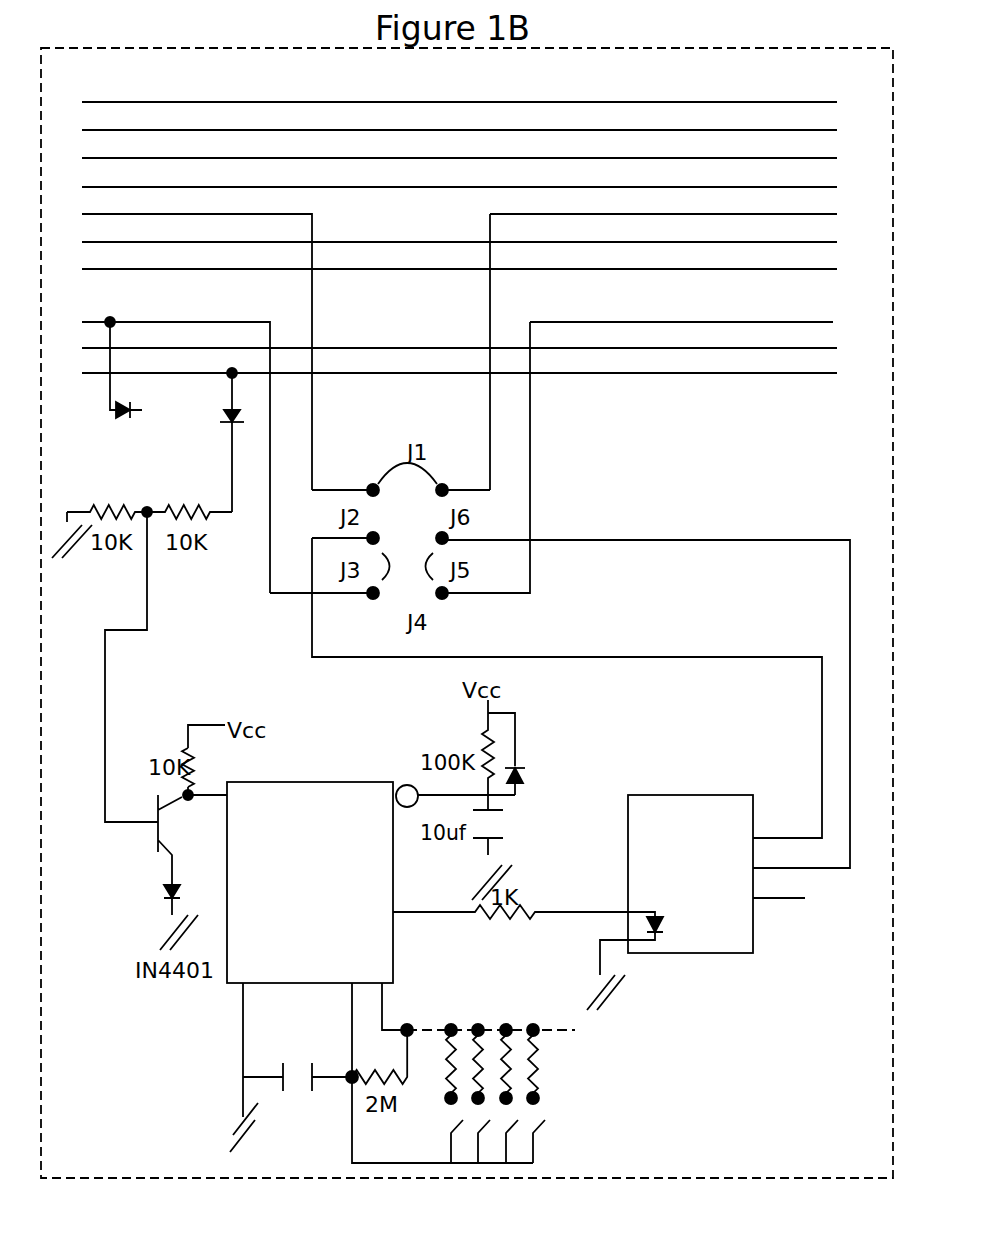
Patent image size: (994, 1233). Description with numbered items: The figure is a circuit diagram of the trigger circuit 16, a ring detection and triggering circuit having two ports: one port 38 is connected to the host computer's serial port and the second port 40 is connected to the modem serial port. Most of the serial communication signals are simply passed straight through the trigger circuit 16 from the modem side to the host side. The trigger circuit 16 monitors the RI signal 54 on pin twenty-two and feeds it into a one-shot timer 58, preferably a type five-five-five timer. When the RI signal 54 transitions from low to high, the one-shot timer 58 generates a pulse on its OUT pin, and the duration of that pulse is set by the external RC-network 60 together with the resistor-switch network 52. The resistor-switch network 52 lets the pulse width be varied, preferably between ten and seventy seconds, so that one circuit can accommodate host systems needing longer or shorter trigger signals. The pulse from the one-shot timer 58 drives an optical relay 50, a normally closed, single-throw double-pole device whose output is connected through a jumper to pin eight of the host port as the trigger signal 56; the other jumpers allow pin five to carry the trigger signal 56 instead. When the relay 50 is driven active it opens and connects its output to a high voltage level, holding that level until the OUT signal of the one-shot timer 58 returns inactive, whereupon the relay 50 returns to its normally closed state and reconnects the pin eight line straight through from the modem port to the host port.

The trigger circuit 16 is at (828, 1172).
The port 38 is at (696, 216).
The second port 40 is at (448, 322).
The optical relay 50 is at (725, 956).
The resistor-switch network 52 is at (545, 1157).
The RI signal 54 is at (98, 380).
The trigger signal 56 is at (868, 328).
The one-shot timer 58 is at (335, 781).
The external RC-network 60 is at (345, 1153).